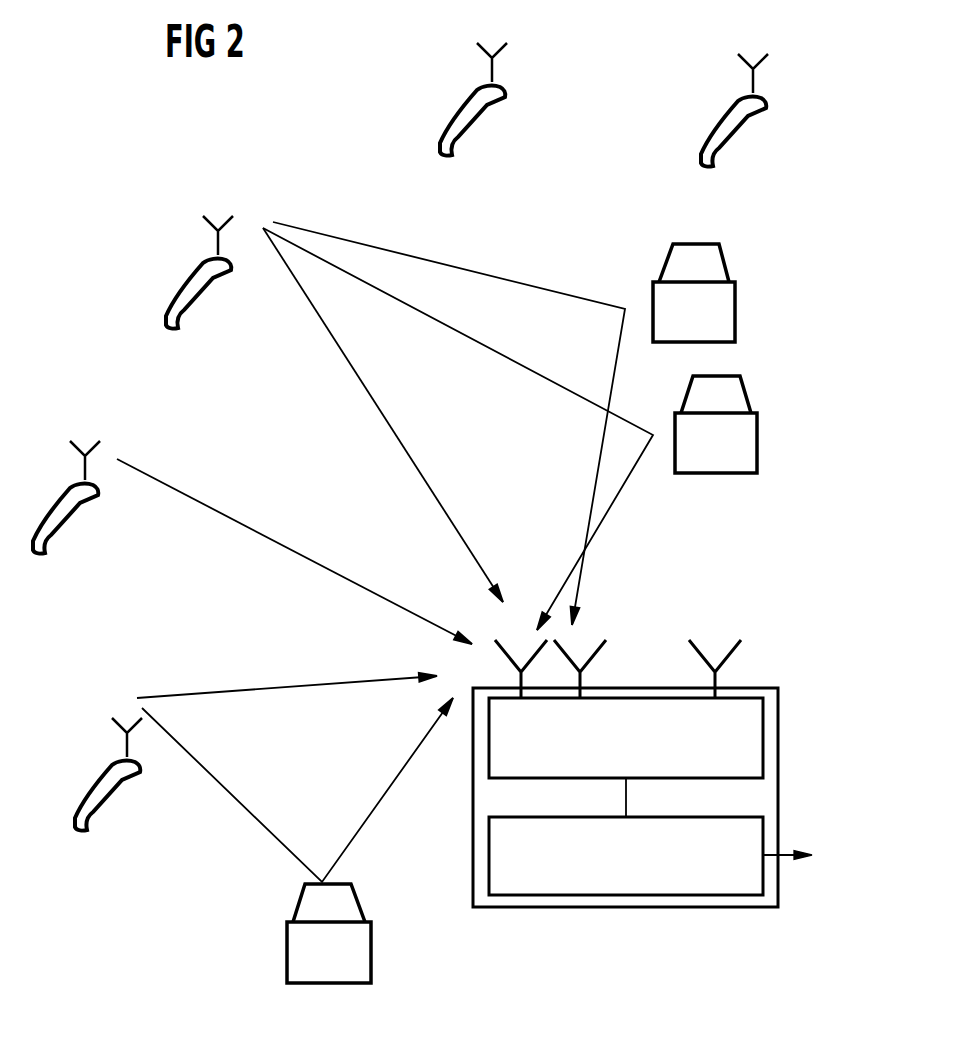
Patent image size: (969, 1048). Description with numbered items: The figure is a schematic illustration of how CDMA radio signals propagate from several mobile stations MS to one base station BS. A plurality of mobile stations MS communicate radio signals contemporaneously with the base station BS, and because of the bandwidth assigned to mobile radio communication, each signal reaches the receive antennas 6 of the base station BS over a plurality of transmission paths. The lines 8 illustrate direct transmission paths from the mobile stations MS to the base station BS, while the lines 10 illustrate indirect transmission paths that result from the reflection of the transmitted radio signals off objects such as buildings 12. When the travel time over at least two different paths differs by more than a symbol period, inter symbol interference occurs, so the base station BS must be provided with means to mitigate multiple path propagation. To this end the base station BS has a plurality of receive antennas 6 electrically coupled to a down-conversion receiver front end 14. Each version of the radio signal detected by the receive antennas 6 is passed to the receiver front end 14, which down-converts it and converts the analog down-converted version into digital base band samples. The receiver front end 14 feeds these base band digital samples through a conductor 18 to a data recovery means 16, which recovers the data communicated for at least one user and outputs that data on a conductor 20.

The mobile station MS is at (400, 454).
The base station BS is at (769, 688).
The receive antenna 6 is at (496, 657).
The direct transmission path 8 is at (372, 392).
The indirect transmission path 10 is at (483, 271).
The building 12 is at (684, 312).
The down-conversion receiver front end 14 is at (524, 736).
The data recovery means 16 is at (524, 853).
The conductor 18 is at (627, 800).
The conductor 20 is at (804, 850).